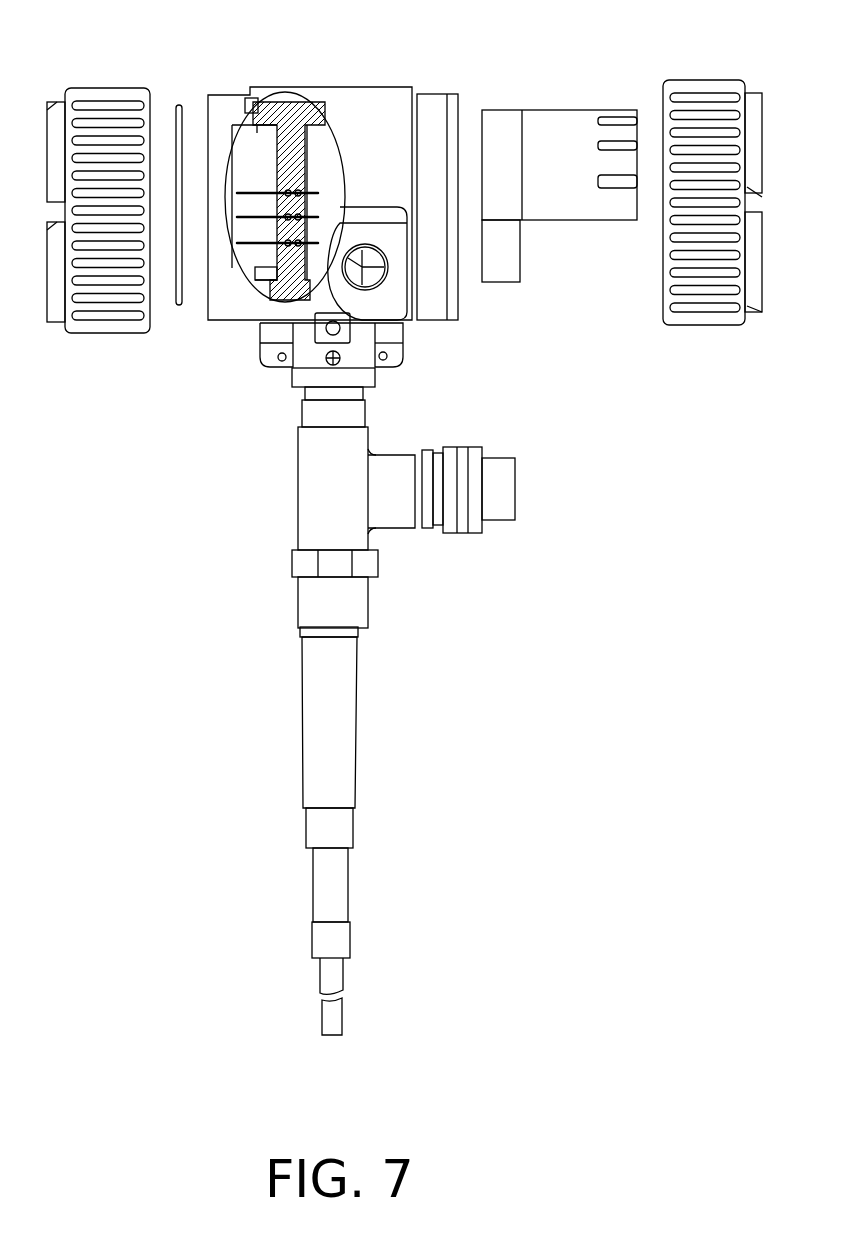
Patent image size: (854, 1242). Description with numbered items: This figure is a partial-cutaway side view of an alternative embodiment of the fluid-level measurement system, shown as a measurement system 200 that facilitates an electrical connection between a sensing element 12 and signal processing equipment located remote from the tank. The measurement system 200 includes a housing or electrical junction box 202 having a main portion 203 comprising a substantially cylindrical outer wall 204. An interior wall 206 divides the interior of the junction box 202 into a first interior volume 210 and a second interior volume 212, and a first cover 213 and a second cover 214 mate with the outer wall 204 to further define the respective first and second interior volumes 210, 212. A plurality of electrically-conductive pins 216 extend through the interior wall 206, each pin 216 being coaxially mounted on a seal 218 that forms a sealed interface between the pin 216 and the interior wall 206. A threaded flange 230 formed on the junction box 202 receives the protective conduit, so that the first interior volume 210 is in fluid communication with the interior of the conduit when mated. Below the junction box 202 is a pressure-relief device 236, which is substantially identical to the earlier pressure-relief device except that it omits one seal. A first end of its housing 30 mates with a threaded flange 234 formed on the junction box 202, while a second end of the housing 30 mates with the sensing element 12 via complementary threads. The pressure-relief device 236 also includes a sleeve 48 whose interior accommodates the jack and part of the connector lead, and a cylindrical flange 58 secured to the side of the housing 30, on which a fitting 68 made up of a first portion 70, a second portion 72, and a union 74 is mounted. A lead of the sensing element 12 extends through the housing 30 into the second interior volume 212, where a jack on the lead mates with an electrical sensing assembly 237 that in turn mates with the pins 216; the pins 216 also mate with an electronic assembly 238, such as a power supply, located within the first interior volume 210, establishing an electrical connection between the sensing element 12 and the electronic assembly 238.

The sensing element 12 is at (362, 790).
The housing 30 is at (297, 528).
The sleeve 48 is at (297, 602).
The cylindrical flange 58 is at (392, 453).
The fitting 68 is at (510, 513).
The first portion 70 is at (428, 531).
The second portion 72 is at (500, 522).
The union 74 is at (464, 535).
The measurement system 200 is at (311, 45).
The junction box 202 is at (73, 334).
The main portion 203 is at (396, 86).
The outer wall 204 is at (258, 98).
The interior wall 206 is at (285, 177).
The first interior volume 210 is at (329, 148).
The second interior volume 212 is at (238, 150).
The first cover 213 is at (705, 79).
The second cover 214 is at (108, 88).
The electrically-conductive pins 216 is at (243, 250).
The seal 218 is at (281, 279).
The threaded flange 230 is at (385, 295).
The threaded flange 234 is at (380, 377).
The pressure-relief device 236 is at (263, 492).
The electrical sensing assembly 237 is at (178, 104).
The electronic assembly 238 is at (558, 109).